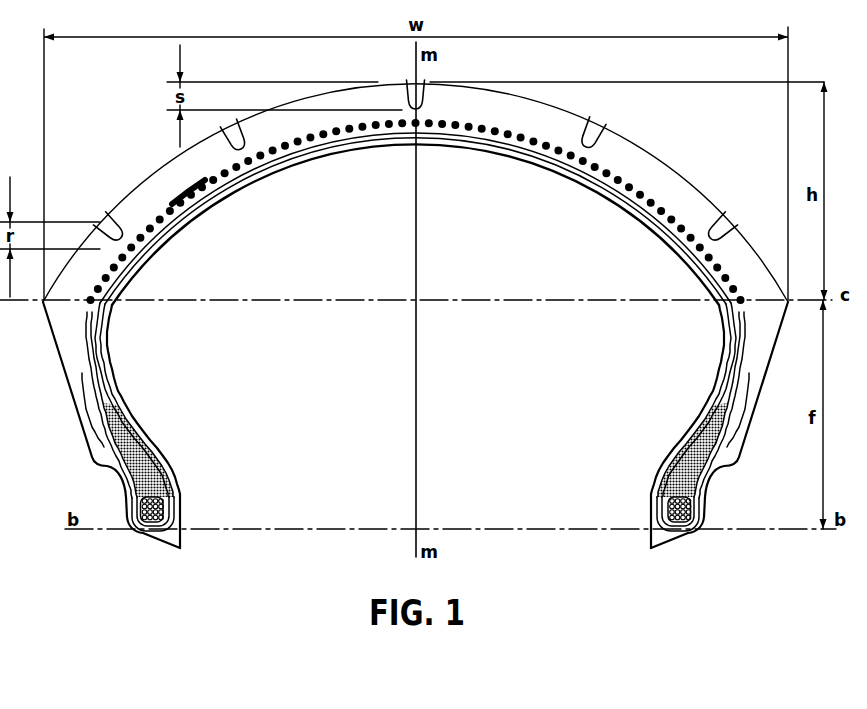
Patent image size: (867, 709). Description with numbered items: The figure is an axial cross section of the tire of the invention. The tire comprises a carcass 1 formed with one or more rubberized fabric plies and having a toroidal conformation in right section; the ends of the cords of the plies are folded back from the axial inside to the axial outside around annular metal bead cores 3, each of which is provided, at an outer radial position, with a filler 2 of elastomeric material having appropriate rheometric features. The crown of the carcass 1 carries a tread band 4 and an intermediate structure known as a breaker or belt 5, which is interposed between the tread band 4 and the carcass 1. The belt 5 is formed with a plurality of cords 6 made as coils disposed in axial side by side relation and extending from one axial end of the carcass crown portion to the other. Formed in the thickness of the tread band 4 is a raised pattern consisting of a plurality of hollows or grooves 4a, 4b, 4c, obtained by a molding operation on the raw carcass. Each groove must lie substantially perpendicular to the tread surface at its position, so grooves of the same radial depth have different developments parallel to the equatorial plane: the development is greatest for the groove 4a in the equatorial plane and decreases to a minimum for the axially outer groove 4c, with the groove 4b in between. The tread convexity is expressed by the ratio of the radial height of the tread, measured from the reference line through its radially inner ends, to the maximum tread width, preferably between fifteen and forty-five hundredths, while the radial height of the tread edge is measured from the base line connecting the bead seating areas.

The carcass 1 is at (105, 343).
The filler 2 is at (142, 438).
The annular metal bead cores 3 is at (165, 510).
The tread band 4 is at (320, 136).
The groove 4a is at (428, 110).
The groove 4b is at (603, 147).
The groove 4c is at (721, 250).
The belt 5 is at (197, 197).
The cords 6 is at (485, 133).